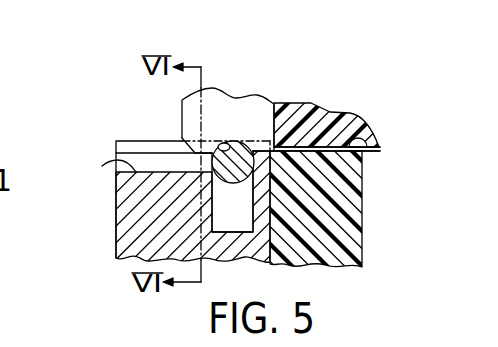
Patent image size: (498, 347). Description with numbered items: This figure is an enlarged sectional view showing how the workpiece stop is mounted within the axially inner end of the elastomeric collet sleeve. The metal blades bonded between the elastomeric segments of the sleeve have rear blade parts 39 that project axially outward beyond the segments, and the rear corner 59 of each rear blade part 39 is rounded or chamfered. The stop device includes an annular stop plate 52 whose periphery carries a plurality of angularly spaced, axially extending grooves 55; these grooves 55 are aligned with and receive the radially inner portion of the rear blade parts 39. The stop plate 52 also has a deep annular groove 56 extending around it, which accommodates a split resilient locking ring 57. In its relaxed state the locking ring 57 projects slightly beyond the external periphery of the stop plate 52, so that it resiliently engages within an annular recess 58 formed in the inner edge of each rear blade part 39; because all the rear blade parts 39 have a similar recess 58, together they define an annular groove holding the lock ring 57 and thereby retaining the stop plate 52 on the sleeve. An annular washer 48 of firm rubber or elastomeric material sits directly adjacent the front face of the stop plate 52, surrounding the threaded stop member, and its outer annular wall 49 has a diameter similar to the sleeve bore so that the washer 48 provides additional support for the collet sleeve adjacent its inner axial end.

The rear blade part 39 is at (274, 105).
The annular washer 48 is at (344, 246).
The outer annular wall 49 is at (375, 152).
The annular stop plate 52 is at (137, 207).
The axially extending groove 55 is at (102, 166).
The annular groove 56 is at (229, 222).
The split resilient locking ring 57 is at (246, 146).
The annular recess 58 is at (221, 143).
The rear corner 59 is at (183, 153).